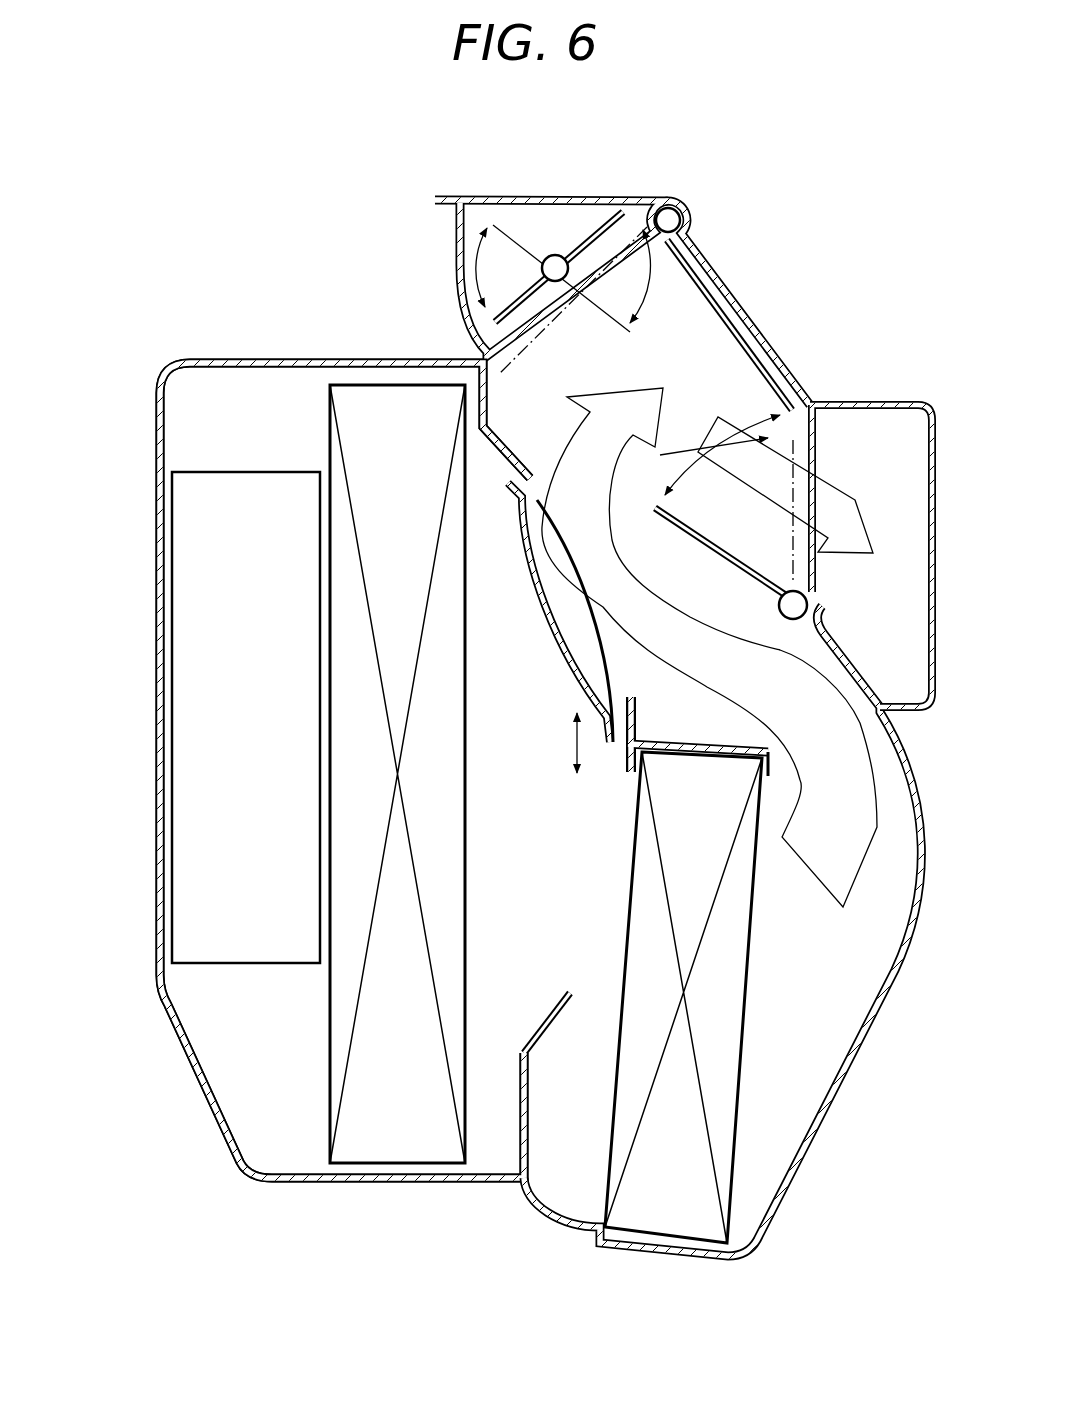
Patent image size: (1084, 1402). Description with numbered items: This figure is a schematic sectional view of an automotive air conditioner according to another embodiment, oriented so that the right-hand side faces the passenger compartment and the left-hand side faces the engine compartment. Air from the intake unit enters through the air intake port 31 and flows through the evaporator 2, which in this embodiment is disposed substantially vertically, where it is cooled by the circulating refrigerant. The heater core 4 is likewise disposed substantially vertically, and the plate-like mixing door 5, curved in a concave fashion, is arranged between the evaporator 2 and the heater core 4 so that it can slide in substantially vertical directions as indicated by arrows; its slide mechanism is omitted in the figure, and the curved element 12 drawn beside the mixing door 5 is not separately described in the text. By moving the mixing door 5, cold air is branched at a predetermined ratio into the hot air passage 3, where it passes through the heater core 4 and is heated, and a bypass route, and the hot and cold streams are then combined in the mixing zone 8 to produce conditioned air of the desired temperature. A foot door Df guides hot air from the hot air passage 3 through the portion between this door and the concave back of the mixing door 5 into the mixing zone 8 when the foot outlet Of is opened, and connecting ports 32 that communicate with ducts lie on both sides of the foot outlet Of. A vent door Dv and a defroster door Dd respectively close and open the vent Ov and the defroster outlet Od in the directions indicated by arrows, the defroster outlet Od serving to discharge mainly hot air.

The evaporator 2 is at (395, 1147).
The hot air passage 3 is at (722, 931).
The heater core 4 is at (673, 1223).
The mixing door 5 is at (523, 590).
The mixing zone 8 is at (685, 405).
The air mix door 12 is at (547, 643).
The air intake port 31 is at (183, 927).
The connecting ports 32 is at (895, 430).
The defroster door Dd is at (590, 232).
The vent door Dv is at (750, 312).
The foot door Df is at (700, 523).
The defroster outlet Od is at (533, 328).
The vent Ov is at (710, 248).
The foot outlet Of is at (820, 457).